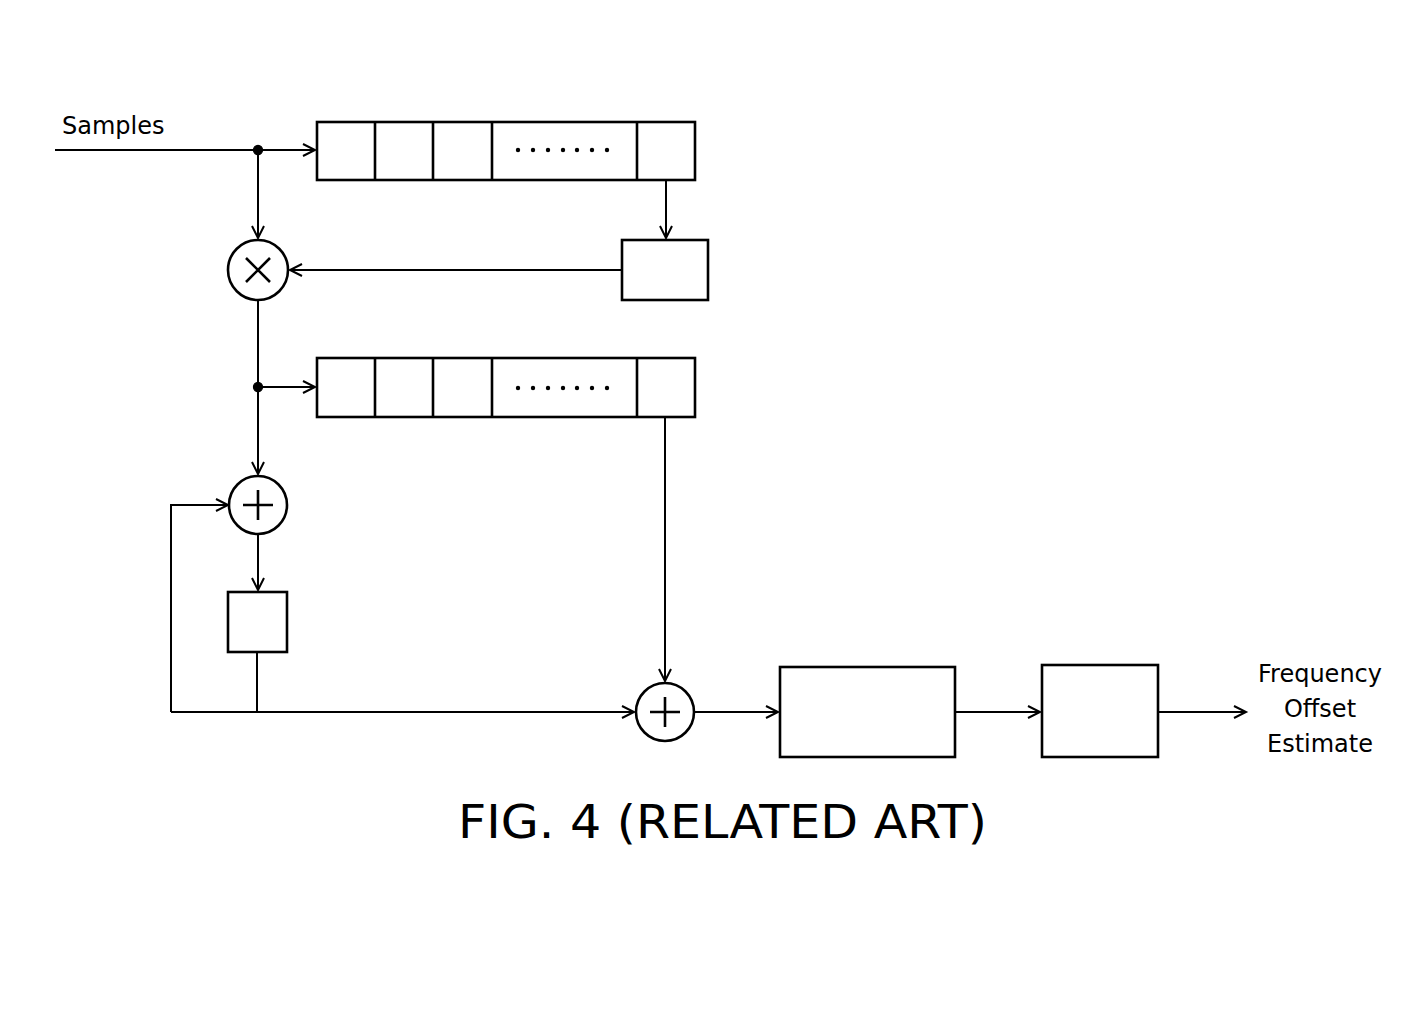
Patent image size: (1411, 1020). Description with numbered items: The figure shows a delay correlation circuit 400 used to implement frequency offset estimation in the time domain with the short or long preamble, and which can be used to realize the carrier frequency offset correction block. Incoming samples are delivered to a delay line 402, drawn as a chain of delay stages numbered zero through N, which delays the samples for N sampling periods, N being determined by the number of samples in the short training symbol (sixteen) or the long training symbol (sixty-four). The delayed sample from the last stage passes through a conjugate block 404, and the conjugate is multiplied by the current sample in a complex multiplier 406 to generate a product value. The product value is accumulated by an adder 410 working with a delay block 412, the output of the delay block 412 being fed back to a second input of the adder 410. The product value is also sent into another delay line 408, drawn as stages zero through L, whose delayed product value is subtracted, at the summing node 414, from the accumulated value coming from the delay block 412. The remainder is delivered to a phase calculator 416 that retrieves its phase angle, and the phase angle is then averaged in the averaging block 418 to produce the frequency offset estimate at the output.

The delay correlation circuit 400 is at (606, 60).
The delay line 402 is at (695, 150).
The conjugate block 404 is at (708, 270).
The complex multiplier 406 is at (228, 270).
The delay line 408 is at (695, 388).
The adder 410 is at (287, 505).
The delay block 412 is at (287, 622).
The subtractor 414 is at (684, 692).
The phase calculator 416 is at (898, 667).
The averager 418 is at (1100, 665).